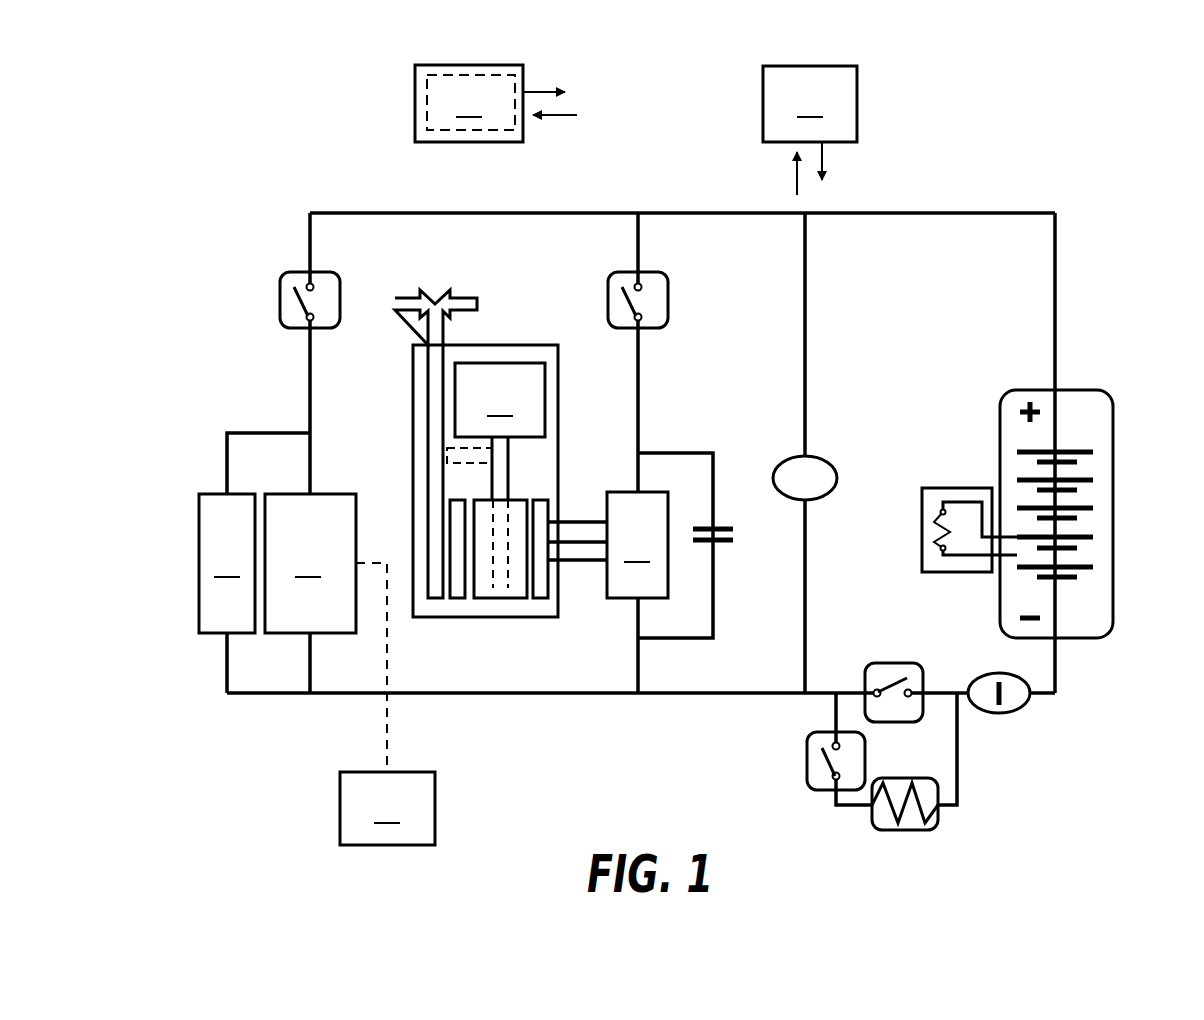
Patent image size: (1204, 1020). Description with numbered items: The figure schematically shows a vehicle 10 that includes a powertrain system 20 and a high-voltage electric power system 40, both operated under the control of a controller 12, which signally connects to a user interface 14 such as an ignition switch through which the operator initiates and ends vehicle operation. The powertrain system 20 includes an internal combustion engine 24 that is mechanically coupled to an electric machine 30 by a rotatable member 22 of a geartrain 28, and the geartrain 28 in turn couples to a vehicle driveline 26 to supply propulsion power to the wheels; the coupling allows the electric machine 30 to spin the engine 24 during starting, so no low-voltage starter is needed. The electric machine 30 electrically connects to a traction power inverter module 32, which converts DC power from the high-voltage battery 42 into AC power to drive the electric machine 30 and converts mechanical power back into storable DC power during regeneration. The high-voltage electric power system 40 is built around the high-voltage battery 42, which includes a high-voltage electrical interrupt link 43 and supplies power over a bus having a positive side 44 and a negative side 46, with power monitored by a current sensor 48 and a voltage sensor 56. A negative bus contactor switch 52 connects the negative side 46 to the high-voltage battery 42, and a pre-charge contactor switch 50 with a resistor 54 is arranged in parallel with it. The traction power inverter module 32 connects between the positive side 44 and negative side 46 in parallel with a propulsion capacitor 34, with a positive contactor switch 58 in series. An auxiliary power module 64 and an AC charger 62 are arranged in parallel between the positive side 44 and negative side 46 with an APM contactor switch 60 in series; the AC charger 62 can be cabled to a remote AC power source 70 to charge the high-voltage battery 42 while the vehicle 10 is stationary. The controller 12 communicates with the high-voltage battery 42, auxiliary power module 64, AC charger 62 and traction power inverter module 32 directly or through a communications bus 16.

The vehicle 10 is at (274, 156).
The controller 12 is at (810, 104).
The user interface 14 is at (496, 103).
The communications bus 16 is at (823, 165).
The powertrain system 20 is at (550, 345).
The rotatable member 22 is at (500, 470).
The internal combustion engine 24 is at (500, 400).
The vehicle driveline 26 is at (480, 302).
The geartrain 28 is at (435, 400).
The electric machine 30 is at (538, 617).
The traction power inverter module 32 is at (637, 592).
The propulsion capacitor 34 is at (735, 536).
The high-voltage electric power system 40 is at (392, 210).
The high-voltage battery 42 is at (1072, 485).
The high-voltage electrical interrupt link 43 is at (960, 488).
The positive side of high-voltage bus 44 is at (1003, 212).
The negative side of high-voltage bus 46 is at (1058, 668).
The current sensor 48 is at (1015, 712).
The pre-charge contactor switch 50 is at (807, 762).
The negative bus contactor switch 52 is at (893, 663).
The resistor 54 is at (940, 810).
The voltage sensor 56 is at (838, 478).
The positive contactor switch 58 is at (668, 300).
The APM contactor switch 60 is at (340, 300).
The AC charger 62 is at (310, 563).
The auxiliary power module 64 is at (227, 563).
The remote AC power source 70 is at (387, 704).